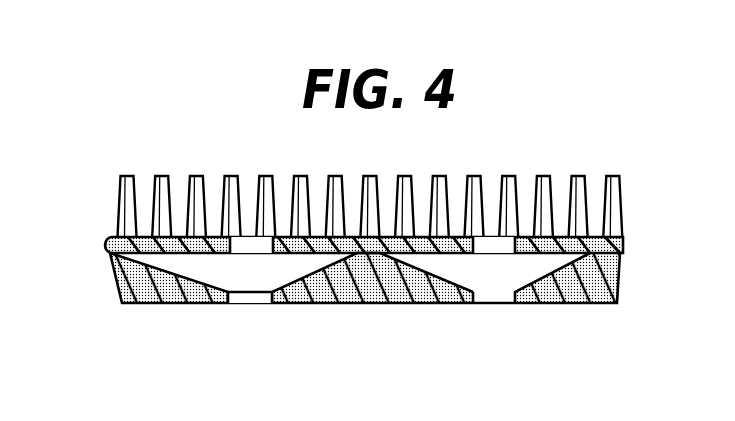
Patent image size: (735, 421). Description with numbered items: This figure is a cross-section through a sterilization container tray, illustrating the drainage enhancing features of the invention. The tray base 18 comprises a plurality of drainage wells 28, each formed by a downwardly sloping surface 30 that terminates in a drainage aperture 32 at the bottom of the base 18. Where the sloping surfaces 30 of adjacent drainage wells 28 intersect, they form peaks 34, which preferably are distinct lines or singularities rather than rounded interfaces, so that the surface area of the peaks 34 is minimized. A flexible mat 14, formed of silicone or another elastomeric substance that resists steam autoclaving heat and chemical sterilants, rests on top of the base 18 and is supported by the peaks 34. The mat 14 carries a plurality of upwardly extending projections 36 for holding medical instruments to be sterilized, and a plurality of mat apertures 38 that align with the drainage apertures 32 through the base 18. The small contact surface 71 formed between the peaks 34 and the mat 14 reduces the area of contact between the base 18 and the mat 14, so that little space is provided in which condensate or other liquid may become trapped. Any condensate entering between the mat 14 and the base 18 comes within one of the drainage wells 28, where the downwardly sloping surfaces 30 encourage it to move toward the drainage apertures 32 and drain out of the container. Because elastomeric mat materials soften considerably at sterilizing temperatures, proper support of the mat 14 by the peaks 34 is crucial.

The mat 14 is at (629, 243).
The base 18 is at (631, 282).
The drainage well 28 is at (451, 266).
The downwardly sloping surface 30 is at (163, 271).
The drainage aperture 32 is at (253, 297).
The peak 34 is at (625, 242).
The projection 36 is at (581, 183).
The mat aperture 38 is at (252, 242).
The contact surface 71 is at (358, 256).